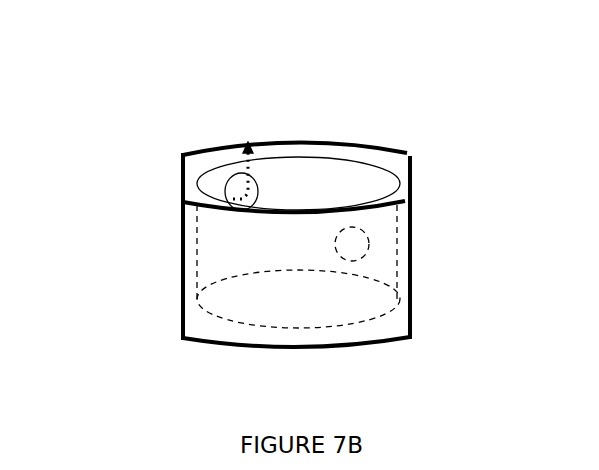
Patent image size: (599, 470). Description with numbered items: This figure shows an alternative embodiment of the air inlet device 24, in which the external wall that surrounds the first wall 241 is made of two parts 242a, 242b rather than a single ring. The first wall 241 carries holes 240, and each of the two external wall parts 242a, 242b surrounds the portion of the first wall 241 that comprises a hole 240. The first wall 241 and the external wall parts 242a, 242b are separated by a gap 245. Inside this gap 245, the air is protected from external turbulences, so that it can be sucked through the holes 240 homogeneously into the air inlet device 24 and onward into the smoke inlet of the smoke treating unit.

The air inlet device 24 is at (180, 72).
The second part of the external wall 242b is at (197, 148).
The first part of the external wall 242a is at (227, 338).
The hole 240 is at (352, 237).
The gap 245 is at (370, 165).
The first wall 241 is at (363, 327).